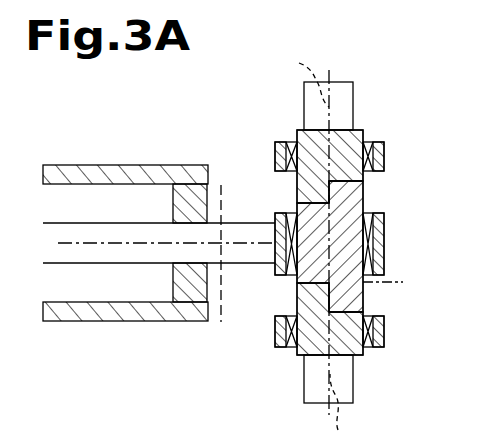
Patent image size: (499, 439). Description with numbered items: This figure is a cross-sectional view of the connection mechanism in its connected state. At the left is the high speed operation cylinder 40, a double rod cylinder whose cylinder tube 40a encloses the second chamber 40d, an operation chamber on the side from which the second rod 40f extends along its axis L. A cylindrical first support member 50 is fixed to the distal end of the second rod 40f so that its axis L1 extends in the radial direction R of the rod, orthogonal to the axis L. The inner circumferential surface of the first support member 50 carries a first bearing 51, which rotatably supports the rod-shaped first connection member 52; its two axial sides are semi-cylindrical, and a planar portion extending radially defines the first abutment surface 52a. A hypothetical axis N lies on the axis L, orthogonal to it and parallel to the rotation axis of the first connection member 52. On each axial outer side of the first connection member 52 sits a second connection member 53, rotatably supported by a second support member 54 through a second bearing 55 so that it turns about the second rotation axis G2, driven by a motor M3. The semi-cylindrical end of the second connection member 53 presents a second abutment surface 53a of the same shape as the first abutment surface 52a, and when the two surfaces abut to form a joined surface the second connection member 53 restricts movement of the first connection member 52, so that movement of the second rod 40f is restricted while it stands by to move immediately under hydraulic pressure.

The high speed operation cylinder 40 is at (159, 250).
The cylinder tube 40a is at (75, 322).
The second chamber 40d is at (147, 196).
The second rod 40f is at (85, 264).
The axis L is at (85, 243).
The hypothetical axis N is at (221, 187).
The radial direction R is at (232, 367).
The motor M3 is at (342, 82).
The second rotation axis G2 is at (313, 244).
The first connection member 52 is at (297, 284).
The first abutment surface 52a is at (332, 183).
The second connection member 53 is at (358, 128).
The second abutment surface 53a is at (300, 196).
The axis of the first support member L1 is at (426, 275).
The second support member 54 is at (282, 141).
The second bearing 55 is at (372, 141).
The first support member 50 is at (357, 237).
The first bearing 51 is at (376, 210).